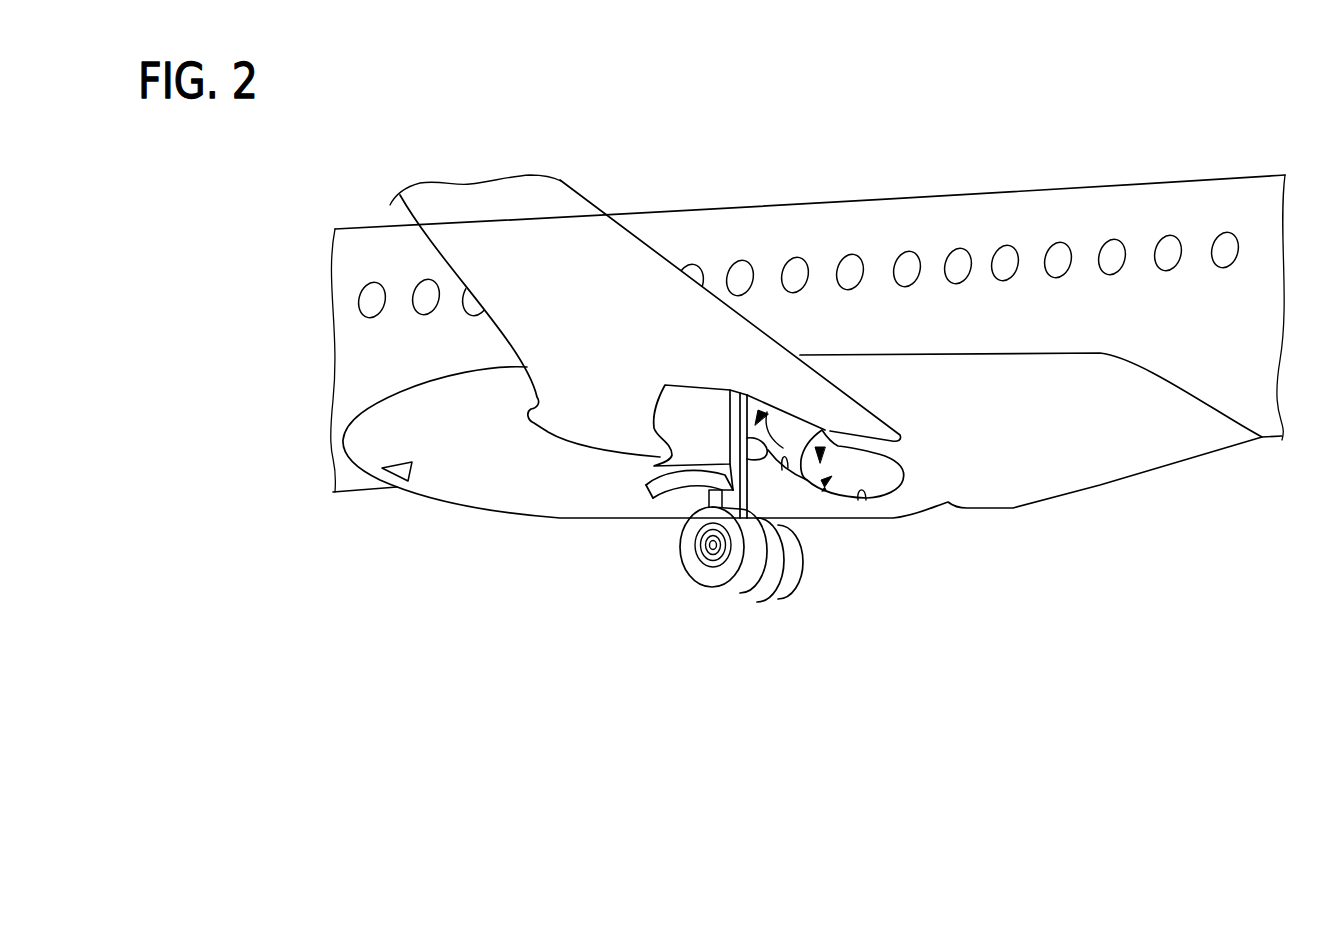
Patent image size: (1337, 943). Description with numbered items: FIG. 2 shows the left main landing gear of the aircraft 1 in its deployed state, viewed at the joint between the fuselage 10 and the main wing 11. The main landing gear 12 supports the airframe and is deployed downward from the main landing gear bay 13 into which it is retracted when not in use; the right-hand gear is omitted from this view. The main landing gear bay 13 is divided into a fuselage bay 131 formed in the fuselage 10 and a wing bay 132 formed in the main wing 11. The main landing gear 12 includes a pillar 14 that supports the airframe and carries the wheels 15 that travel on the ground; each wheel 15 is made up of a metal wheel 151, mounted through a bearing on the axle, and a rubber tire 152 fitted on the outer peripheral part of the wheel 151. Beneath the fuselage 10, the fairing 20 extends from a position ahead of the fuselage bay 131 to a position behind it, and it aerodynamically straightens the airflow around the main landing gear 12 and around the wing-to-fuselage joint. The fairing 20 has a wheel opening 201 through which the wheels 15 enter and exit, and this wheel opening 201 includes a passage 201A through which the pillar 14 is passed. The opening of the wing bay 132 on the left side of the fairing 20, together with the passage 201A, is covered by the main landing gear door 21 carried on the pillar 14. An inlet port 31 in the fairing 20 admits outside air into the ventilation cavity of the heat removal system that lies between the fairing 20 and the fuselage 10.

The aircraft 1 is at (992, 143).
The fuselage 10 is at (803, 202).
The main wing 11 is at (603, 213).
The main landing gear 12 is at (695, 609).
The main landing gear bay 13 is at (804, 470).
The fuselage bay 131 is at (820, 448).
The wing bay 132 is at (767, 400).
The pillar 14 is at (706, 492).
The wheel 15 is at (681, 557).
The wheel 151 is at (713, 550).
The tire 152 is at (740, 602).
The fairing 20 is at (1098, 487).
The wheel opening 201 is at (865, 500).
The passage 201A is at (788, 468).
The main landing gear door 21 is at (637, 483).
The inlet port 31 is at (398, 486).